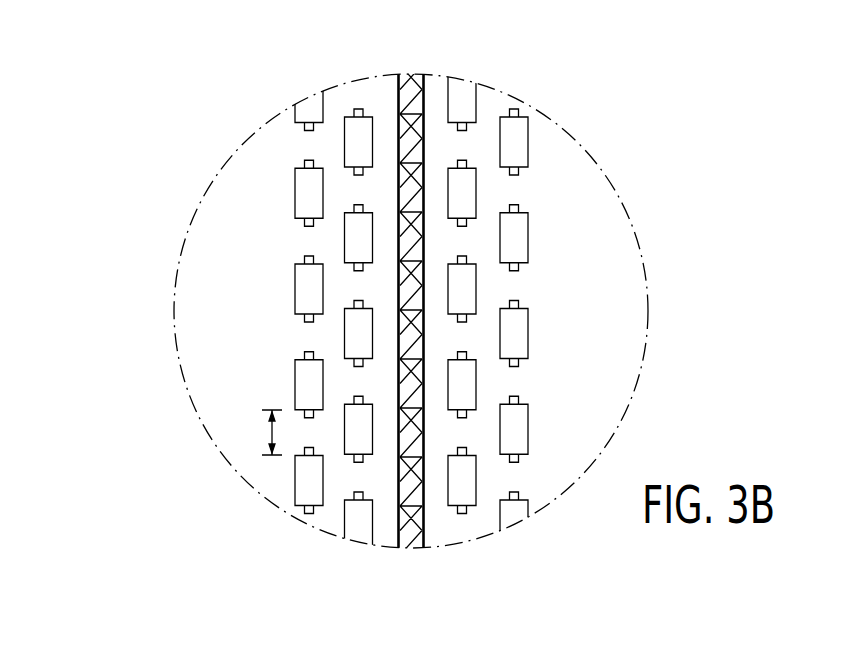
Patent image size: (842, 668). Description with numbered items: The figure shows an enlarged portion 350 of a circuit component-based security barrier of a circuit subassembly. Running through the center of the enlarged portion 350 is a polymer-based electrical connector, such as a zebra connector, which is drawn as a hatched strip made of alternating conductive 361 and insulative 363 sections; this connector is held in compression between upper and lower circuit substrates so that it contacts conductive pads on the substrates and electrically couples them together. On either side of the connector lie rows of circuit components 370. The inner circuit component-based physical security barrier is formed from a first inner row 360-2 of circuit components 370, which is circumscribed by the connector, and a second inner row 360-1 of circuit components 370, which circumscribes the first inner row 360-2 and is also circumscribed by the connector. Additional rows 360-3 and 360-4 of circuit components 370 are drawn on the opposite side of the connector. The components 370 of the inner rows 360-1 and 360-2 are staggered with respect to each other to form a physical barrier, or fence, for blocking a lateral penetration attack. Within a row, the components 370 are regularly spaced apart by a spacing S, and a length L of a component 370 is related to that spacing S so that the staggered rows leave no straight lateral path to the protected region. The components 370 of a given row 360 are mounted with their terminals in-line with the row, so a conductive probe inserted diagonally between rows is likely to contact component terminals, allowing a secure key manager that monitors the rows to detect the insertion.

The enlarged portion 350 is at (345, 82).
The row 360 is at (428, 515).
The second inner row 360-1 is at (343, 337).
The first inner row 360-2 is at (292, 274).
The third light emitting element 360-3 is at (478, 386).
The fourth light emitting element 360-4 is at (530, 336).
The conductive sections 361 is at (413, 76).
The insulative sections 363 is at (428, 148).
The circuit components 370 is at (360, 143).
The spacing S is at (345, 287).
The length L is at (270, 431).